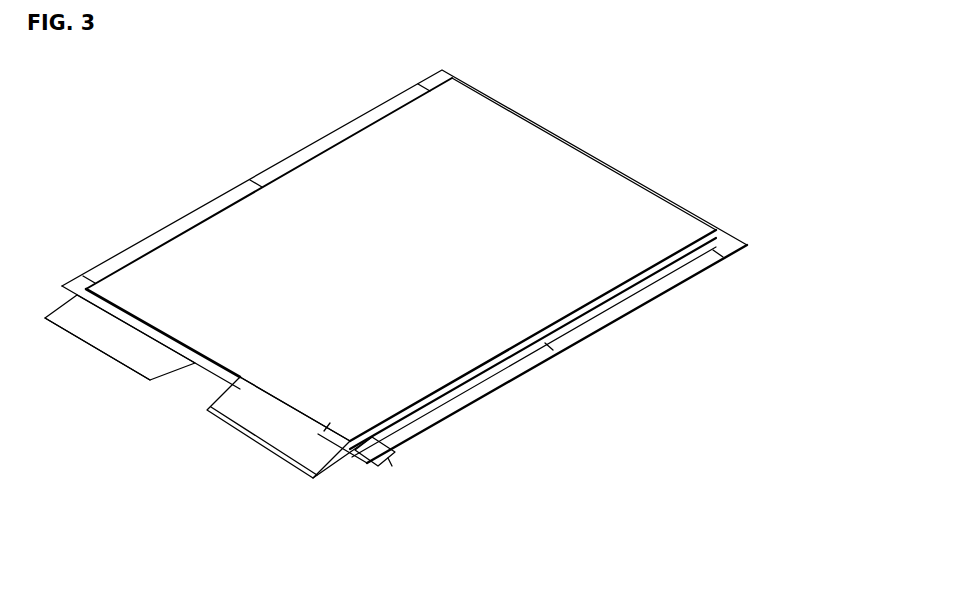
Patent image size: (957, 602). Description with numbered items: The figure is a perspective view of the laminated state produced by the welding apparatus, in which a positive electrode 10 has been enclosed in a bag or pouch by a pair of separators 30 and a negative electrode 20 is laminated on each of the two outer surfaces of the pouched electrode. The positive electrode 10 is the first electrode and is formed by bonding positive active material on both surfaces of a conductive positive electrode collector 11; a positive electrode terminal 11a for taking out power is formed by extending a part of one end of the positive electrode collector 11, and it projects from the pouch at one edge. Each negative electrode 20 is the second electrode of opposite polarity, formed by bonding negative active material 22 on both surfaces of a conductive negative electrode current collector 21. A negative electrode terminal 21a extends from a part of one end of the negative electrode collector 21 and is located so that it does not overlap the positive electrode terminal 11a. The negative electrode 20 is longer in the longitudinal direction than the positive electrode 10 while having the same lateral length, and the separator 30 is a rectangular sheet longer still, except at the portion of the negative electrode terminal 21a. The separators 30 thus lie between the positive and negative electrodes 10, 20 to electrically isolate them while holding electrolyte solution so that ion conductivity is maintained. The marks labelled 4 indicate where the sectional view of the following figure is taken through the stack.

The conductive member 4 is at (318, 431).
The positive electrode 10 is at (115, 385).
The positive electrode collector 11 is at (151, 382).
The positive electrode terminal 11a is at (120, 369).
The negative electrode 20 is at (253, 477).
The negative electrode current collector 21 is at (205, 411).
The negative electrode terminal 21a is at (227, 435).
The negative active material 22 is at (668, 220).
The separator 30 is at (745, 247).